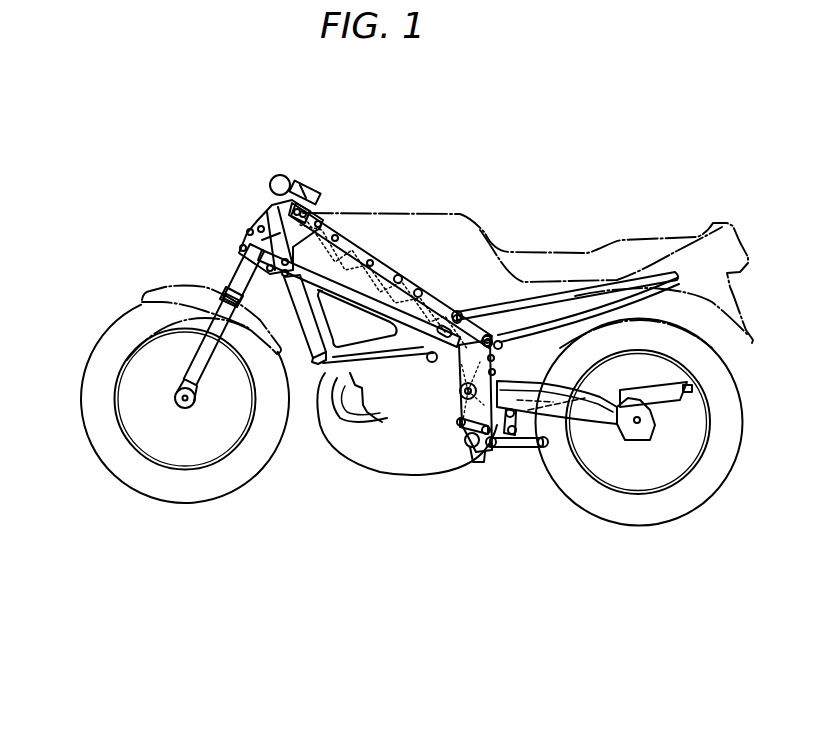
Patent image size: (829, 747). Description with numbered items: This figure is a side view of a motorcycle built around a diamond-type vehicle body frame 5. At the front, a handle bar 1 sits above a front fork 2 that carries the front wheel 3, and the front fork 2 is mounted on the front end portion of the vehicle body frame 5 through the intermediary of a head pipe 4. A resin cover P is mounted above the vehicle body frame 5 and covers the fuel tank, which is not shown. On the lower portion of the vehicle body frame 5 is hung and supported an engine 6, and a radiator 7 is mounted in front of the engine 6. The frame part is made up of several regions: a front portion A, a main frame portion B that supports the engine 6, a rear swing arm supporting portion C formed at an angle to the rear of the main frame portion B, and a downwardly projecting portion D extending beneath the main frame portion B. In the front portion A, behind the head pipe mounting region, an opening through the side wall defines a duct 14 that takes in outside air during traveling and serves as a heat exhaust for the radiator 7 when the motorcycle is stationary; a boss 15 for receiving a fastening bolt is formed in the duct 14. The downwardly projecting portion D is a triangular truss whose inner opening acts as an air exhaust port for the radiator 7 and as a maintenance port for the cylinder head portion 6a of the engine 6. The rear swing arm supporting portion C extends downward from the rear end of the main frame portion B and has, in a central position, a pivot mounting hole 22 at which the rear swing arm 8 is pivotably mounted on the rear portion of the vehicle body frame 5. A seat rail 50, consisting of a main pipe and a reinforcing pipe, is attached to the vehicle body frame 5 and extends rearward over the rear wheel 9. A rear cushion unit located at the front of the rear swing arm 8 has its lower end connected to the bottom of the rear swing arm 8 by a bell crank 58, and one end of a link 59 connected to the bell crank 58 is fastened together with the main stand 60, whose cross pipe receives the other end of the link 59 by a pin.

The handle bar 1 is at (308, 195).
The front fork 2 is at (235, 270).
The front wheel 3 is at (120, 338).
The head pipe 4 is at (275, 184).
The vehicle body frame 5 is at (383, 262).
The boss 15 is at (320, 217).
The duct 14 is at (284, 266).
The radiator 7 is at (304, 352).
The engine 6 is at (400, 393).
The cylinder head portion 6a is at (368, 337).
The pivot mounting hole 22 is at (458, 395).
The seat rail 50 is at (560, 300).
The rear swing arm 8 is at (574, 447).
The rear wheel 9 is at (697, 493).
The bell crank 58 is at (519, 452).
The link 59 is at (478, 445).
The main stand 60 is at (485, 452).
The front portion A is at (272, 215).
The main frame portion B is at (372, 262).
The rear swing arm supporting portion C is at (502, 371).
The downwardly projecting portion D is at (312, 323).
The resin cover P is at (407, 220).